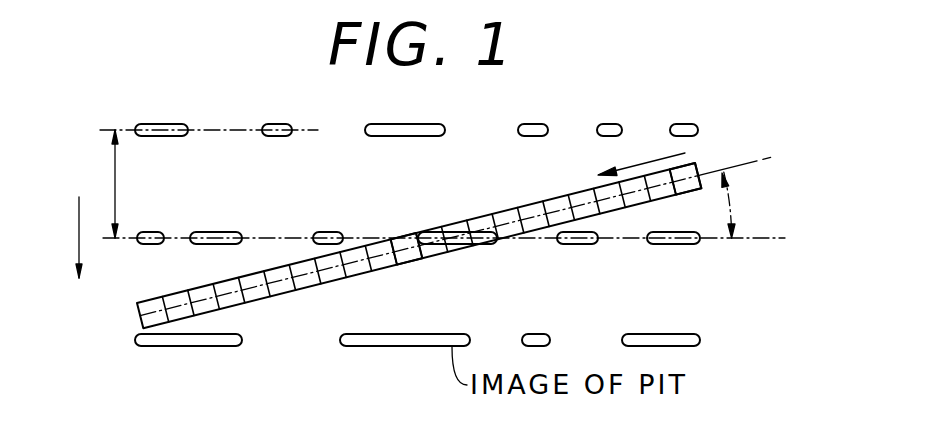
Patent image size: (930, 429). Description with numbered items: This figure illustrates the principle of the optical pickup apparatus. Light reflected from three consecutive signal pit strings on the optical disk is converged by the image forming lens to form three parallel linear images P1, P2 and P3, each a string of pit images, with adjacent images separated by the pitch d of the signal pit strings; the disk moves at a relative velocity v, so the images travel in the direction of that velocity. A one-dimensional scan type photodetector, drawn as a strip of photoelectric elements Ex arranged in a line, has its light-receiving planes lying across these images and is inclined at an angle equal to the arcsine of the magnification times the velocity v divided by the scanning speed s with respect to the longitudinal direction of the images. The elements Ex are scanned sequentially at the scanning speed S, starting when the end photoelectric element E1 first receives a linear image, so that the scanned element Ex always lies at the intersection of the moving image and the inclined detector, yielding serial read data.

The linear image P1 is at (720, 125).
The linear image P2 is at (716, 250).
The linear image P3 is at (716, 340).
The photoelectric element E1 is at (699, 192).
The photoelectric element Ex is at (392, 262).
The scanning speed S is at (641, 154).
The pitch d is at (104, 184).
The relative velocity v is at (68, 237).